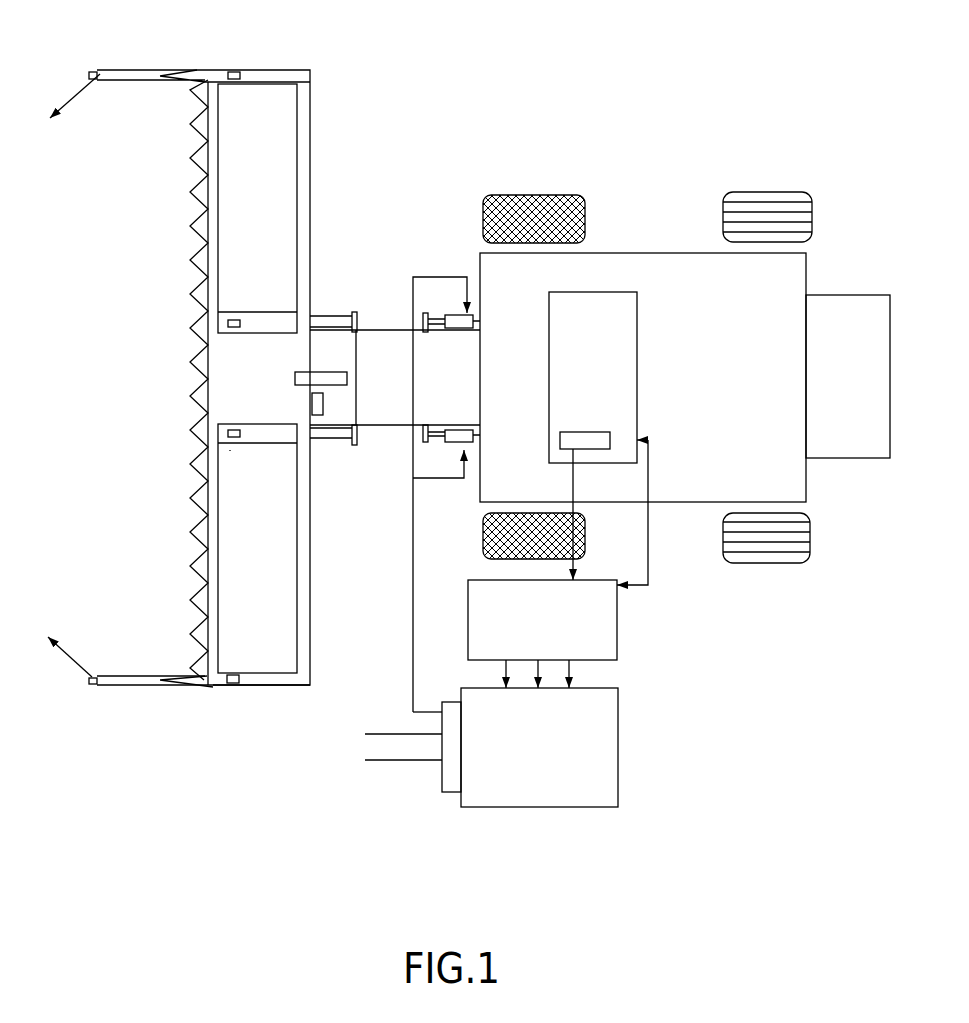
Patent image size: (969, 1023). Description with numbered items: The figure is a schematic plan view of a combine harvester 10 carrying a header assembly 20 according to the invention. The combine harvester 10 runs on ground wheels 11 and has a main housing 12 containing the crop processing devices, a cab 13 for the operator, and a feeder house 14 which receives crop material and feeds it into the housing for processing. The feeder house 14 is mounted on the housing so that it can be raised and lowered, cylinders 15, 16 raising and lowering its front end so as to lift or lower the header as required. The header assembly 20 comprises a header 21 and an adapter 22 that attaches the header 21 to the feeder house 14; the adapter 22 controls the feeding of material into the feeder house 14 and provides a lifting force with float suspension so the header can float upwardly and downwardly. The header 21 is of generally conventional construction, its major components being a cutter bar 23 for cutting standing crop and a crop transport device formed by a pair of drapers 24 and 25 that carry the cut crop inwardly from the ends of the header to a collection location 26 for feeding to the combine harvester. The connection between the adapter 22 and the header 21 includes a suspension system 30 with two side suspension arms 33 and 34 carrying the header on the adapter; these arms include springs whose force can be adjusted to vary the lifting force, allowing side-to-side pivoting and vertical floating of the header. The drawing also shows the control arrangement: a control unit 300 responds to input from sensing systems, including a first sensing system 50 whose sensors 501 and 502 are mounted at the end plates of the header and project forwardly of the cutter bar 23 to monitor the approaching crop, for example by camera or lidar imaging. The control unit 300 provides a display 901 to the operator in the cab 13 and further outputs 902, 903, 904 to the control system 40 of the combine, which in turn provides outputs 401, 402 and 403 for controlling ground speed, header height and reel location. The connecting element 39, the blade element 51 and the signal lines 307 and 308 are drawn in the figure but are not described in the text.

The combine harvester 10 is at (542, 150).
The ground wheels 11 is at (567, 220).
The main housing 12 is at (646, 265).
The cab 13 is at (613, 351).
The feeder house 14 is at (395, 357).
The cylinder 15 is at (470, 318).
The cylinder 16 is at (470, 432).
The header assembly 20 is at (380, 128).
The header 21 is at (268, 702).
The adapter 22 is at (340, 348).
The cutter bar 23 is at (193, 495).
The draper 24 is at (232, 192).
The draper 25 is at (238, 463).
The collection location 26 is at (253, 377).
The suspension system 30 is at (285, 453).
The side suspension arm 33 is at (325, 322).
The side suspension arm 34 is at (327, 433).
The bracket 39 is at (315, 403).
The control system of the combine 40 is at (600, 772).
The first sensing system 50 is at (233, 675).
The blade tip 51 is at (177, 685).
The control unit 300 is at (577, 623).
The signal line 307 is at (650, 543).
The sensor signal line 308 is at (573, 485).
The output 401 is at (413, 590).
The output 402 is at (372, 733).
The output 403 is at (380, 762).
The sensor 501 is at (92, 676).
The sensor 502 is at (93, 78).
The display 901 is at (597, 437).
The output 902 is at (512, 667).
The output 903 is at (570, 668).
The output 904 is at (538, 666).